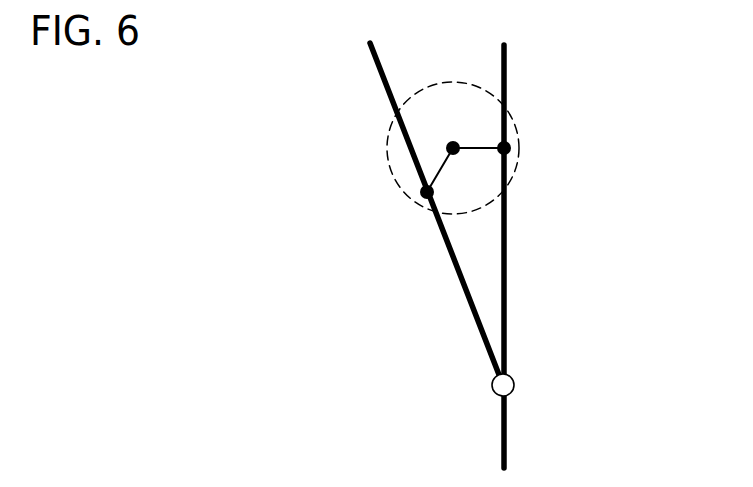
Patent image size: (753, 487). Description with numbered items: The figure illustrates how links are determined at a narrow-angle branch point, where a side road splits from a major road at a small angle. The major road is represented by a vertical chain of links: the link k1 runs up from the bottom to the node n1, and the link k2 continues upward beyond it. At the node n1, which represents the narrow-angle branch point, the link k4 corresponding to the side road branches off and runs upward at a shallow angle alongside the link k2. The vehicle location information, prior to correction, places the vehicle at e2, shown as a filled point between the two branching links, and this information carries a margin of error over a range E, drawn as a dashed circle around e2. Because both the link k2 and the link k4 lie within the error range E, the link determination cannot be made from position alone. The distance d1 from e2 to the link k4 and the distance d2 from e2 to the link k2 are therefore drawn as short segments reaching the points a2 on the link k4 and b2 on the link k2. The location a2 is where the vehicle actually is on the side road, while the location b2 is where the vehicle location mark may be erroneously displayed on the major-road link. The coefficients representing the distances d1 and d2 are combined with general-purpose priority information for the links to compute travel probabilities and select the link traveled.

The link k4 is at (379, 67).
The link k2 is at (507, 93).
The link k1 is at (506, 445).
The node n1 is at (514, 382).
The location a2 is at (423, 197).
The location b2 is at (511, 147).
The vehicle location e2 is at (449, 145).
The distance d1 is at (443, 170).
The distance d2 is at (488, 146).
The error range E is at (388, 163).